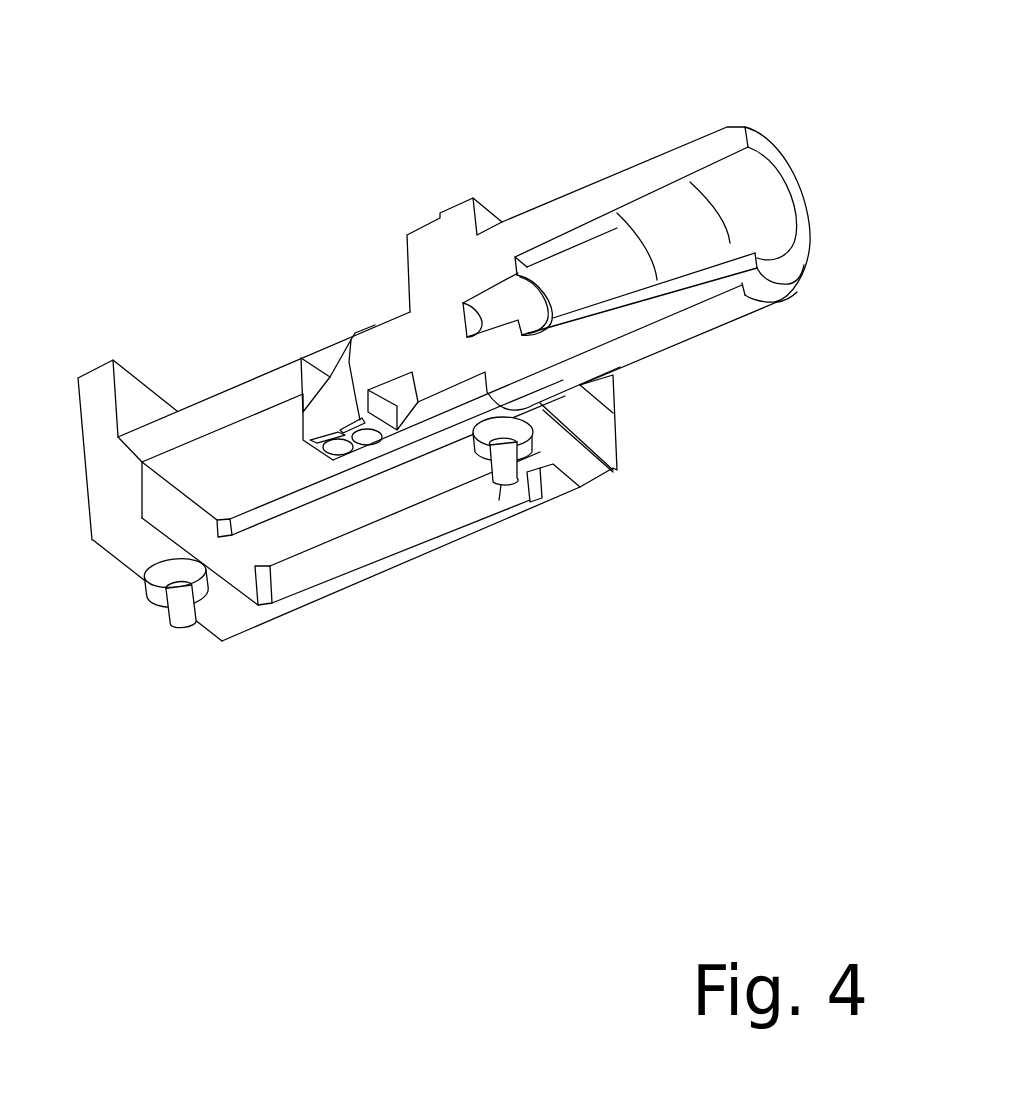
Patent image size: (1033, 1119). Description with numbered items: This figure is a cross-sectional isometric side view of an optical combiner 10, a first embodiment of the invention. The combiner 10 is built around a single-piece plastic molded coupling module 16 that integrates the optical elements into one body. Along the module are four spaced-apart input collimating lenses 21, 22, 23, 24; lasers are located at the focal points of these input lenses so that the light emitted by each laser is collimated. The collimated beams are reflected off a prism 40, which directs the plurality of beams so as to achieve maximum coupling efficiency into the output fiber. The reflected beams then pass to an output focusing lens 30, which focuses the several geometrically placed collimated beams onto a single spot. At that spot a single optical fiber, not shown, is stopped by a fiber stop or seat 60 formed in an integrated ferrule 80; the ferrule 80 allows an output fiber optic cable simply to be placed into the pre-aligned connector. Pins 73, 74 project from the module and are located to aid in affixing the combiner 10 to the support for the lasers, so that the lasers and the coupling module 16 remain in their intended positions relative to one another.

The optical combiner 10 is at (277, 117).
The coupling module 16 is at (555, 450).
The input collimating lens 21 is at (325, 452).
The input collimating lens 22 is at (360, 420).
The input collimating lens 23 is at (342, 447).
The input collimating lens 24 is at (372, 442).
The output focusing lens 30 is at (463, 318).
The prism 40 is at (342, 362).
The fiber stop 60 is at (523, 274).
The pin 73 is at (178, 627).
The pin 74 is at (508, 483).
The ferrule 80 is at (662, 173).